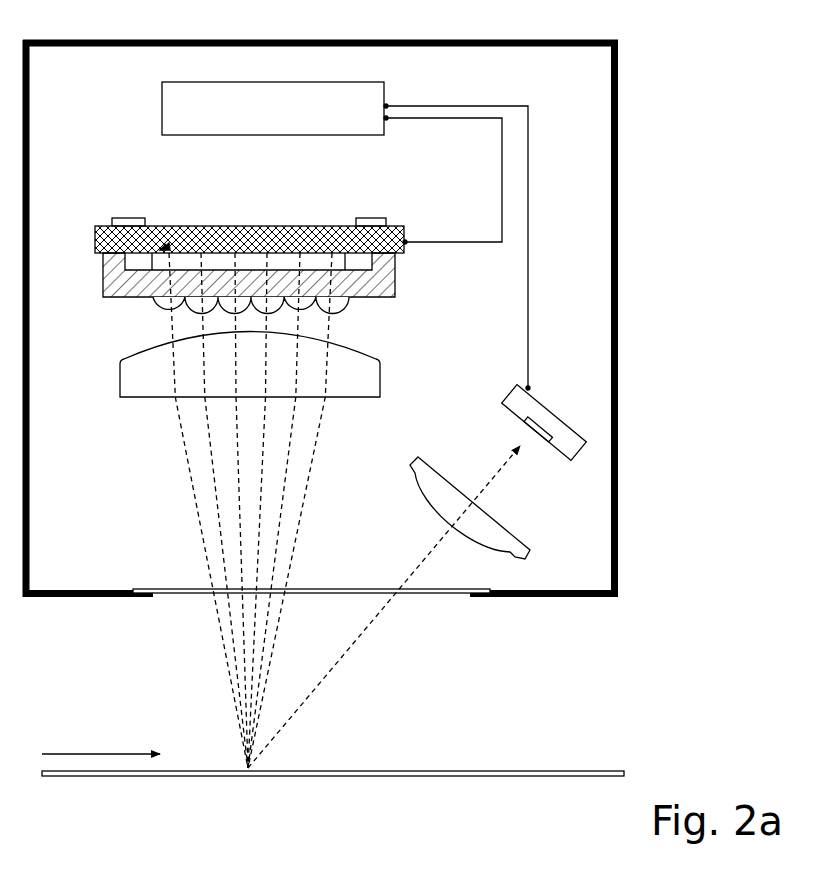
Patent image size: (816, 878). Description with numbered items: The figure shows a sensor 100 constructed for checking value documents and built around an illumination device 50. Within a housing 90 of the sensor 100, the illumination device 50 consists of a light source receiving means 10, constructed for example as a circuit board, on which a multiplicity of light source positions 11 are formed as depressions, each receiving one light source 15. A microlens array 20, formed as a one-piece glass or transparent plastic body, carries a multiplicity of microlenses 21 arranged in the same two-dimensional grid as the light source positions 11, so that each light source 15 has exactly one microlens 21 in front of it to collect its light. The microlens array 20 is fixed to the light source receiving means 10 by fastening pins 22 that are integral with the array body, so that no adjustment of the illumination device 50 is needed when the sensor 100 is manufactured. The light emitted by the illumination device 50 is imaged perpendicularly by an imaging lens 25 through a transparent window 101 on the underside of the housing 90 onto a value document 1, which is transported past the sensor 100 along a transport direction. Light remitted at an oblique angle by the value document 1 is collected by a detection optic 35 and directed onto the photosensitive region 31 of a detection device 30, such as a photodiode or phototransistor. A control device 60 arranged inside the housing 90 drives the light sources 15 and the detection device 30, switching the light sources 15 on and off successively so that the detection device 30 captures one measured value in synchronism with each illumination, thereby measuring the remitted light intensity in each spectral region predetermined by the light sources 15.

The sensor 100 is at (345, 29).
The housing 90 is at (619, 280).
The transparent window 101 is at (148, 590).
The control device 60 is at (162, 108).
The illumination device 50 is at (78, 215).
The light source receiving means 10 is at (278, 211).
The fastening pins 22 is at (373, 218).
The light source positions 11 is at (165, 247).
The light source 15 is at (167, 245).
The microlens array 20 is at (280, 293).
The microlenses 21 is at (345, 302).
The imaging lens 25 is at (380, 375).
The detection device 30 is at (533, 442).
The photosensitive region 31 is at (537, 440).
The detection optic 35 is at (526, 552).
The value document 1 is at (417, 769).